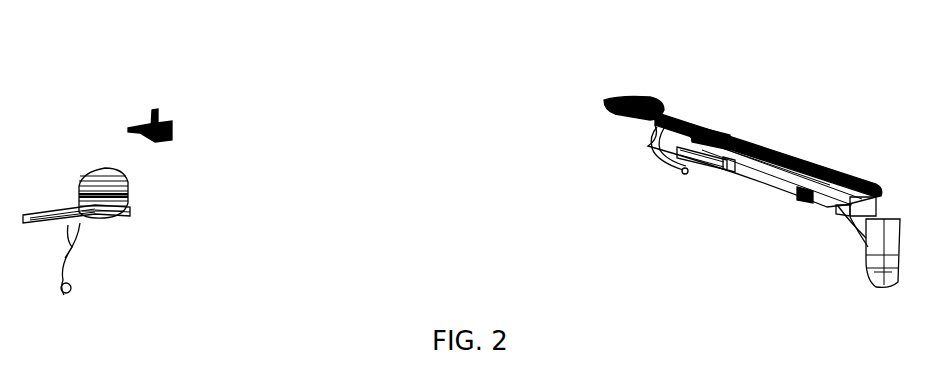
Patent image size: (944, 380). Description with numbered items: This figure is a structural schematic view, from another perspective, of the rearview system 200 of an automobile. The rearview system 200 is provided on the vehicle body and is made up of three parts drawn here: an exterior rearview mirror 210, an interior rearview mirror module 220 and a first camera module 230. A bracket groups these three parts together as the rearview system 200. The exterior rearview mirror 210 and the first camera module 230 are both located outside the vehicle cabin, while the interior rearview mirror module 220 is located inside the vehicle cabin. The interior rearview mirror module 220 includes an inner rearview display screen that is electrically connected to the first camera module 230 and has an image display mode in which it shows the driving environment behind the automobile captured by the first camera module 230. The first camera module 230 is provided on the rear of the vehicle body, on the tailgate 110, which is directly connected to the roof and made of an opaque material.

The rearview system 200 is at (472, 67).
The exterior rearview mirror 210 is at (72, 180).
The interior rearview mirror module 220 is at (172, 122).
The first camera module 230 is at (603, 101).
The tailgate 110 is at (710, 158).